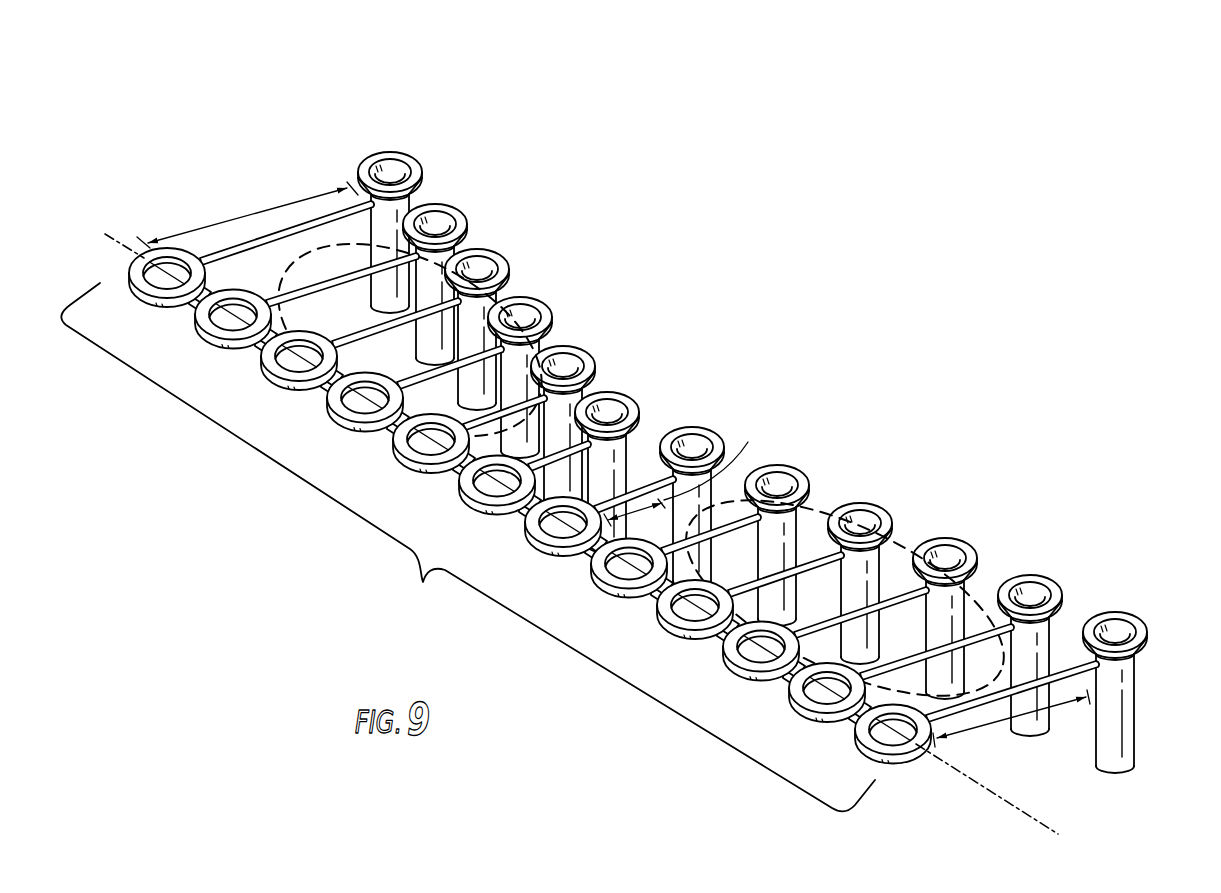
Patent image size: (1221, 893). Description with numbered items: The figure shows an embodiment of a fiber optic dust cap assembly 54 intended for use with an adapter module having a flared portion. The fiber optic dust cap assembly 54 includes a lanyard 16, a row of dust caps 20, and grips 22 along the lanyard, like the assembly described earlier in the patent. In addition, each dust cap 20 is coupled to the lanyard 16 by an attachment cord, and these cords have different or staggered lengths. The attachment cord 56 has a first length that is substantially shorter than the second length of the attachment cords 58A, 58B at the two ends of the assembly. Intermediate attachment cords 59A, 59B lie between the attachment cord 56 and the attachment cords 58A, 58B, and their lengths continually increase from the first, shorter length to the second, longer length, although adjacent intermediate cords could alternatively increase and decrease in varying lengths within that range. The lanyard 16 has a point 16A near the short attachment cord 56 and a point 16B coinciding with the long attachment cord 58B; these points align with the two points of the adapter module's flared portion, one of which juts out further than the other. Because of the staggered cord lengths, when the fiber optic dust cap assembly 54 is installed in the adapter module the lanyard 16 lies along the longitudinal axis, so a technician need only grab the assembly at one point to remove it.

The fiber optic dust cap assembly 54 is at (632, 451).
The dust cap 20 is at (414, 181).
The grip 22 is at (155, 305).
The lanyard 16 is at (468, 547).
The point of the lanyard 16A is at (523, 527).
The point of the lanyard 16B is at (853, 738).
The attachment cord 56 is at (643, 480).
The attachment cord 58A is at (330, 220).
The attachment cord 58B is at (1067, 665).
The intermediate attachment cords 59A is at (503, 303).
The intermediate attachment cords 59B is at (893, 572).